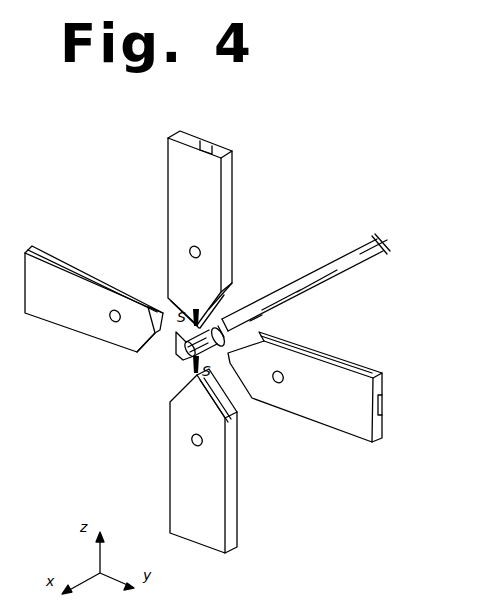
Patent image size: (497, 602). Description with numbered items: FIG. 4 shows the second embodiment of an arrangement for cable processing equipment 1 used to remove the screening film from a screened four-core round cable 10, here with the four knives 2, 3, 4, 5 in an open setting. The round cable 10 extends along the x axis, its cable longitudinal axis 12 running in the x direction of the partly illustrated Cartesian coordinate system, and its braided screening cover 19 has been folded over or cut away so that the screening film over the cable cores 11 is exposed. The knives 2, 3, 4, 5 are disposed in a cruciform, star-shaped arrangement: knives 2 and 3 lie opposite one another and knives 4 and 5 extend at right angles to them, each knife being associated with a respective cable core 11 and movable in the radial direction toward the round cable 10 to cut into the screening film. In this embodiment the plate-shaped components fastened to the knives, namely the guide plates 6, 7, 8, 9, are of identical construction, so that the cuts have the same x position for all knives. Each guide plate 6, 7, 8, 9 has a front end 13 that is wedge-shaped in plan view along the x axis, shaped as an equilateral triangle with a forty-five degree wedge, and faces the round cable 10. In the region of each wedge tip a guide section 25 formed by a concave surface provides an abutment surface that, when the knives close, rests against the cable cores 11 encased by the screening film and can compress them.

The cable processing equipment 1 is at (74, 168).
The knife 2 is at (227, 210).
The knife 3 is at (238, 523).
The knife 4 is at (95, 258).
The knife 5 is at (347, 357).
The guide plate 6 is at (180, 199).
The guide plate 7 is at (186, 518).
The guide plate 8 is at (85, 323).
The guide plate 9 is at (323, 408).
The screened round cable 10 is at (346, 258).
The cable core 11 is at (184, 360).
The cable longitudinal axis 12 is at (388, 240).
The front end 13 is at (153, 340).
The braided screening cover 19 is at (231, 310).
The guide section 25 is at (153, 347).